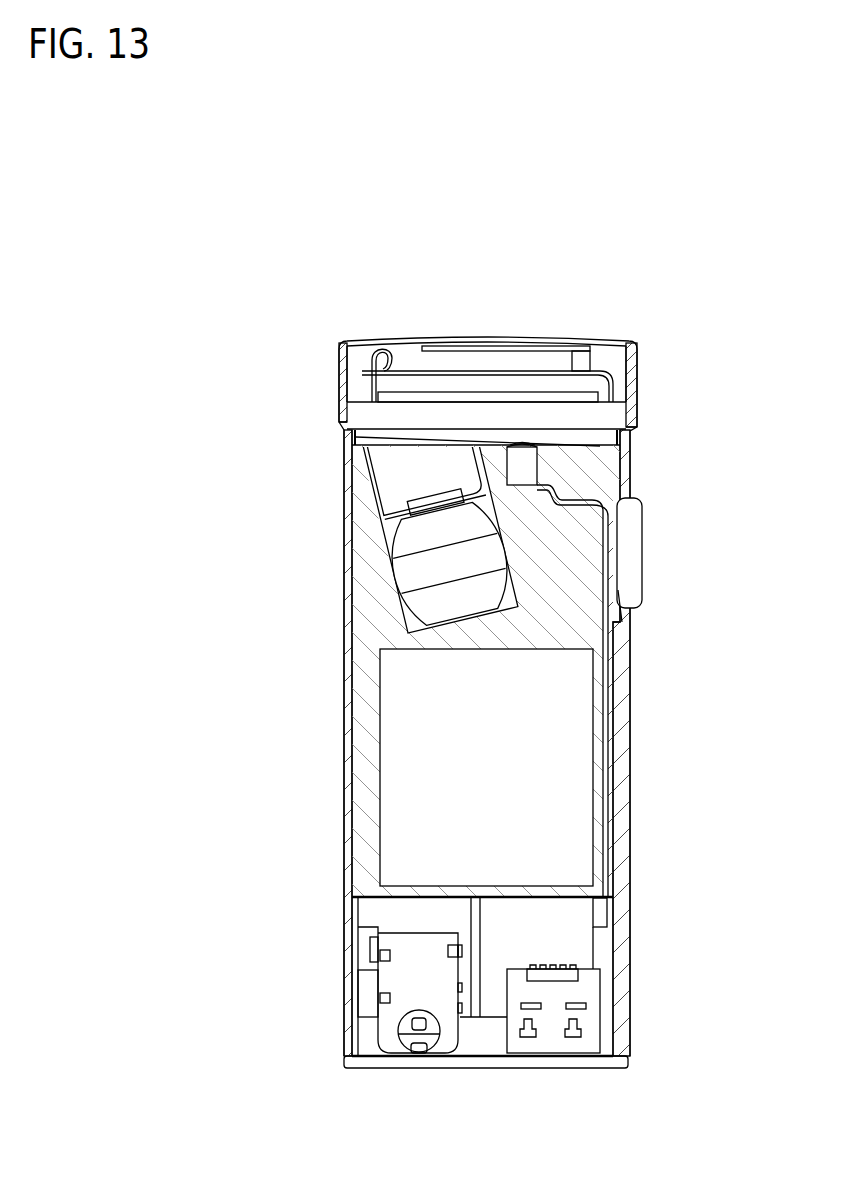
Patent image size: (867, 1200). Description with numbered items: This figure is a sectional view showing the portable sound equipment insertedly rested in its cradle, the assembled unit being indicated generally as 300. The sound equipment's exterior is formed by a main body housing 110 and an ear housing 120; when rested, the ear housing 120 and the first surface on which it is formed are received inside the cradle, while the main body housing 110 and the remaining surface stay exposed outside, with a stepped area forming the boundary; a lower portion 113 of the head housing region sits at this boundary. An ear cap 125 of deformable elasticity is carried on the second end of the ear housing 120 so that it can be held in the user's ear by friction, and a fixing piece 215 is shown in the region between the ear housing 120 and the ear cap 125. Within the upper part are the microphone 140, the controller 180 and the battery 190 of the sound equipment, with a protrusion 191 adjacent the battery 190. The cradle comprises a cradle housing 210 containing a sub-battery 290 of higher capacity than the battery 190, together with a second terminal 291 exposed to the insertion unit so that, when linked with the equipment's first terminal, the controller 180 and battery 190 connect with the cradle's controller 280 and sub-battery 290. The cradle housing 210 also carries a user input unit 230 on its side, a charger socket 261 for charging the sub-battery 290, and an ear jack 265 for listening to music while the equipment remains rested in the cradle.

The electronic device 300 is at (299, 320).
The main body housing 110 is at (633, 371).
The head housing lower portion 113 is at (374, 437).
The ear housing 120 is at (410, 507).
The ear cap 125 is at (412, 582).
The microphone 140 is at (583, 356).
The controller 180 is at (474, 366).
The battery 190 is at (620, 412).
The support plate protrusion 191 is at (527, 442).
The cradle housing 210 is at (360, 757).
The camera fixing member 215 is at (382, 530).
The user input unit 230 is at (628, 552).
The charger socket 261 is at (555, 1047).
The ear jack 265 is at (394, 1047).
The controller 280 is at (584, 951).
The sub-battery 290 is at (583, 691).
The second terminal 291 is at (523, 473).